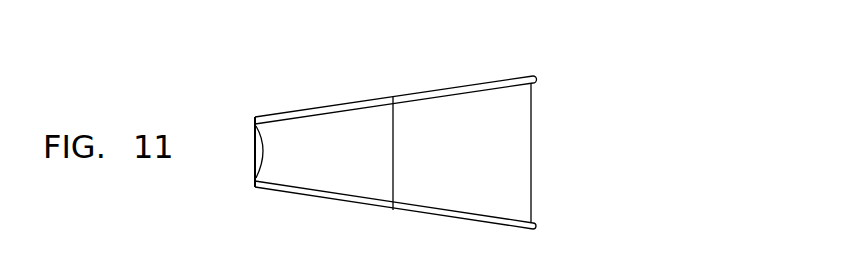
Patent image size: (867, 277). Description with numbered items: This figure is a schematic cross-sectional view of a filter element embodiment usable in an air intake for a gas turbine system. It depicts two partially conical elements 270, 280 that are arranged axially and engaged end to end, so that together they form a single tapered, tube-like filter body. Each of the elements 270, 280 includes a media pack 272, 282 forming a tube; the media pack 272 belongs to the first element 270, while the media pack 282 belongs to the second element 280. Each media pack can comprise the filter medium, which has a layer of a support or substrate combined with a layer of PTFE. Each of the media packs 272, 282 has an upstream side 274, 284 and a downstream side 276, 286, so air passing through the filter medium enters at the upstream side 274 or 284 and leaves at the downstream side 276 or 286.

The partially conical element 270 is at (404, 138).
The media pack 272 is at (273, 187).
The upstream side 274 is at (328, 199).
The downstream side 276 is at (327, 114).
The partially conical element 280 is at (482, 68).
The media pack 282 is at (477, 220).
The upstream side 284 is at (528, 231).
The downstream side 286 is at (458, 94).